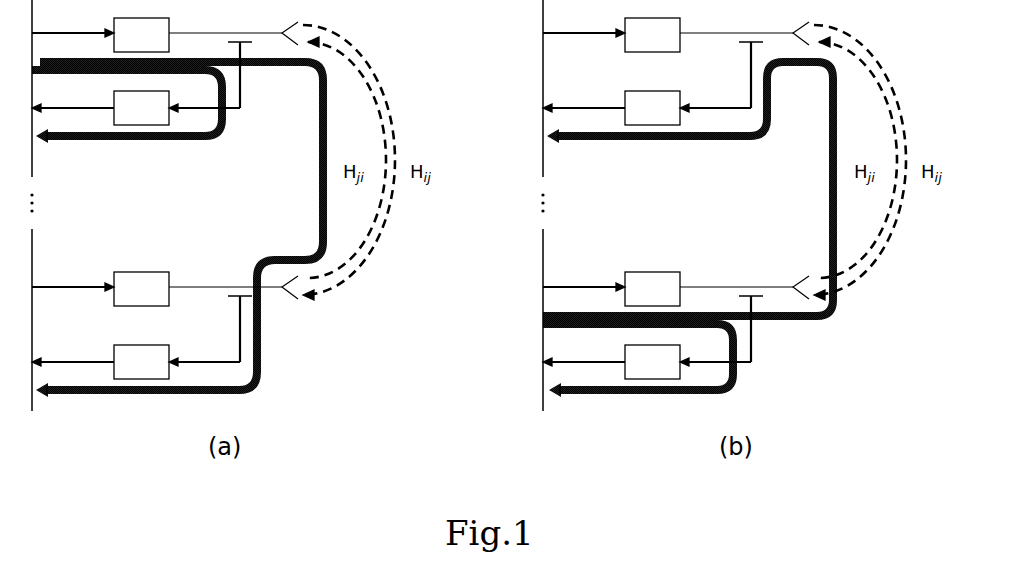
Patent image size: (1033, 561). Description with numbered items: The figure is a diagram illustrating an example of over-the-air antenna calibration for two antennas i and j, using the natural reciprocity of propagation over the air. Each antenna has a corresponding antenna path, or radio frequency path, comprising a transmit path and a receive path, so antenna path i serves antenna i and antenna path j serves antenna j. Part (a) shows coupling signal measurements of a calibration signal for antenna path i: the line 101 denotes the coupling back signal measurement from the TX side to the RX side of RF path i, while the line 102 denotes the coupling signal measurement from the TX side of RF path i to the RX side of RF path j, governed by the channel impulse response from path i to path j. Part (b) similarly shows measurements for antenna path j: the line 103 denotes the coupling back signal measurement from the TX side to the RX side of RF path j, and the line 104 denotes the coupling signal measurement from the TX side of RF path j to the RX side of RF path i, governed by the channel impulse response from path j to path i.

The line 101 is at (103, 170).
The line 102 is at (103, 424).
The line 103 is at (614, 424).
The line 104 is at (614, 170).